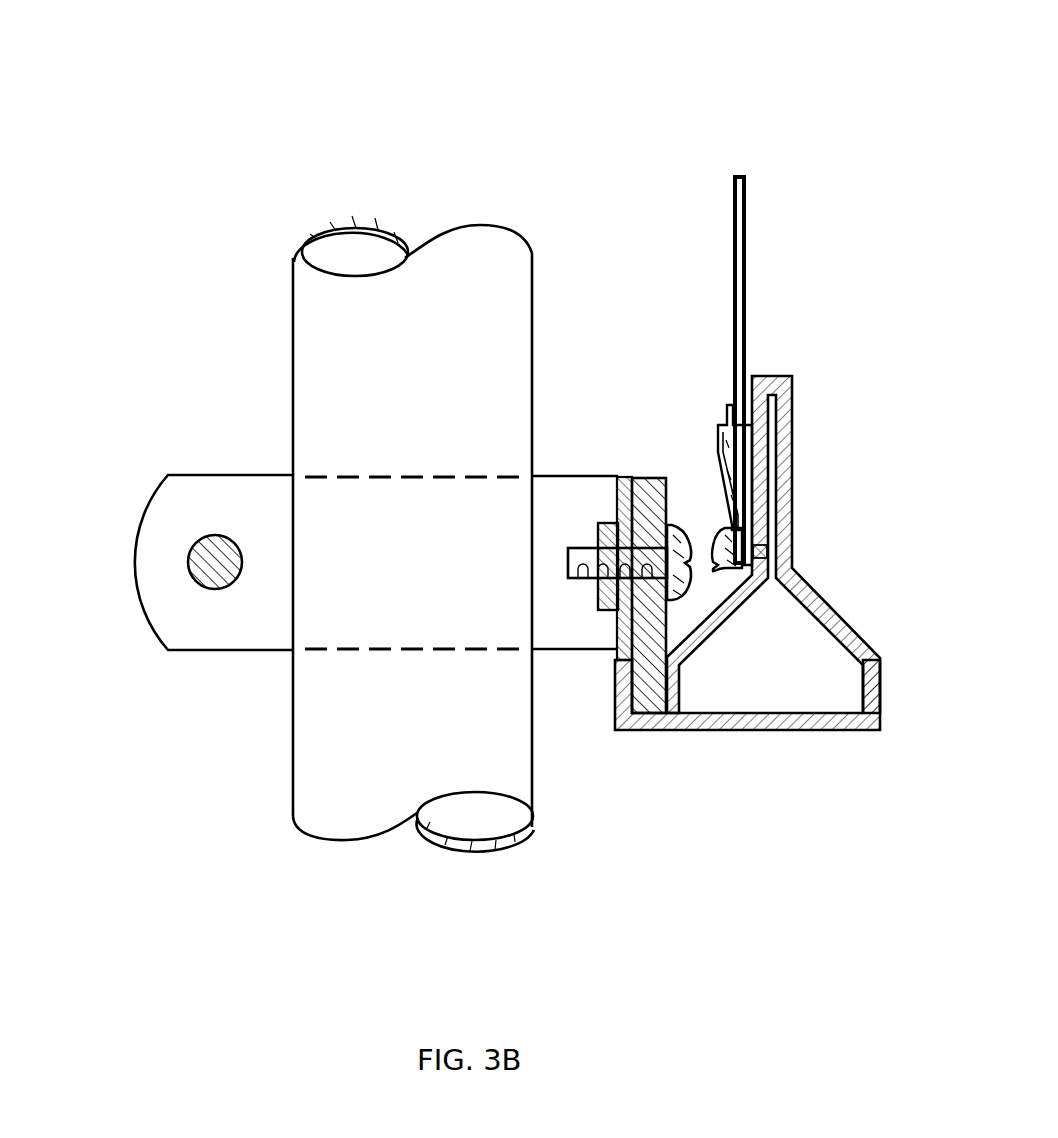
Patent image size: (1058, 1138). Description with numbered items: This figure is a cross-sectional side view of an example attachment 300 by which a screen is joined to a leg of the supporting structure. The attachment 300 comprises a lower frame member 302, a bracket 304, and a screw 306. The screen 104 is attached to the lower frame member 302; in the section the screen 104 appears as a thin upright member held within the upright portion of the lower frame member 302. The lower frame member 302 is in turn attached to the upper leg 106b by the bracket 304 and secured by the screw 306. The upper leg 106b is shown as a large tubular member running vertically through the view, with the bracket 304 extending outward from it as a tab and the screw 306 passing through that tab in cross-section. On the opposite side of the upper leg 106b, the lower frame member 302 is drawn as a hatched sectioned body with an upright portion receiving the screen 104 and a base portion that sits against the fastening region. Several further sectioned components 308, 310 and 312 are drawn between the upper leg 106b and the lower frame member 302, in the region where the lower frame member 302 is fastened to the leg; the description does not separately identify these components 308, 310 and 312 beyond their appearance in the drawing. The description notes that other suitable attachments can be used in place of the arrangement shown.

The attachment 300 is at (810, 66).
The screen 104 is at (747, 222).
The upper leg 106b is at (533, 787).
The lower frame member 302 is at (795, 505).
The bracket 304 is at (140, 525).
The screw 306 is at (188, 563).
The plate 308 is at (653, 705).
The nut 310 is at (684, 525).
The bolt and washer 312 is at (603, 523).